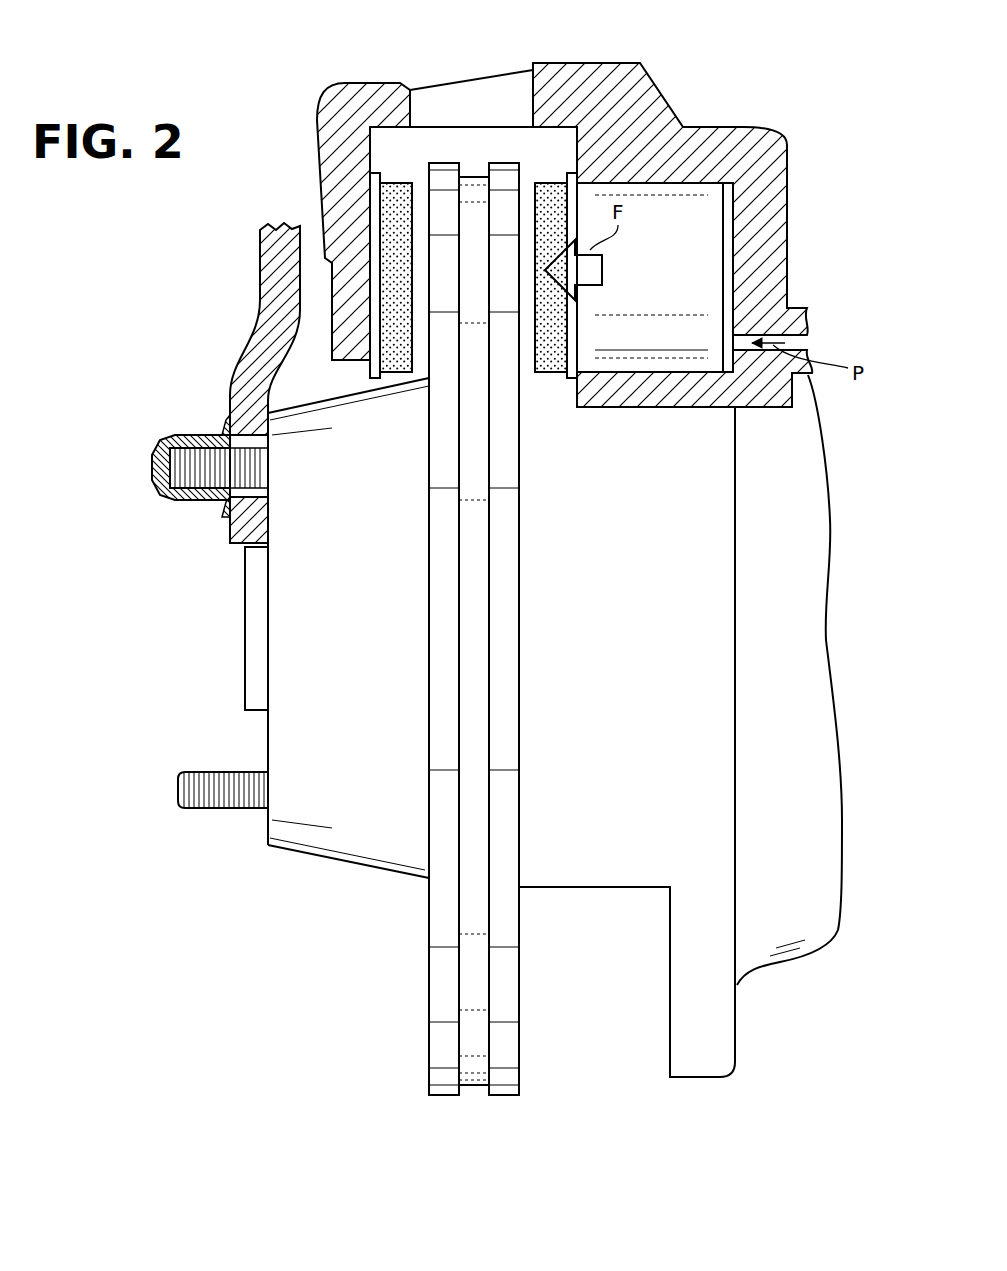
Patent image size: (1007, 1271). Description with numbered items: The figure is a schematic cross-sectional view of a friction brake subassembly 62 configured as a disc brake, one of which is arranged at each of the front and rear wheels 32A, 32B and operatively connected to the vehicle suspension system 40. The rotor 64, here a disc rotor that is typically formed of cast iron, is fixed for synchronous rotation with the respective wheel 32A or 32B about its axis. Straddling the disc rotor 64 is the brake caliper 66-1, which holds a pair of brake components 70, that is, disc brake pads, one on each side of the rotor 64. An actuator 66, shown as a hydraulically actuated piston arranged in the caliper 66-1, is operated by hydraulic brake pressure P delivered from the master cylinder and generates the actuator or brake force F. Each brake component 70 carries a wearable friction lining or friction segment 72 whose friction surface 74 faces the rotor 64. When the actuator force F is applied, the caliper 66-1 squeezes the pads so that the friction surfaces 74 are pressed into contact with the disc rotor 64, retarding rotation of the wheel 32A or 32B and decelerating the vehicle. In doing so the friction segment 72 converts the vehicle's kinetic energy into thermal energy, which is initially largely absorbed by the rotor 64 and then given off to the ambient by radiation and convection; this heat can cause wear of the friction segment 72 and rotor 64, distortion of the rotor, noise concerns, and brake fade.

The friction brake subassembly 62 is at (517, 542).
The actuator 66 is at (678, 210).
The brake caliper 66-1 is at (332, 137).
The friction segment 72 is at (387, 335).
The friction surface 74 is at (413, 323).
The brake component 70 is at (416, 354).
The rotor 64 is at (507, 523).
The vehicle suspension system 40 is at (806, 962).
The front wheel 32A is at (198, 562).
The rear wheel 32B is at (186, 396).